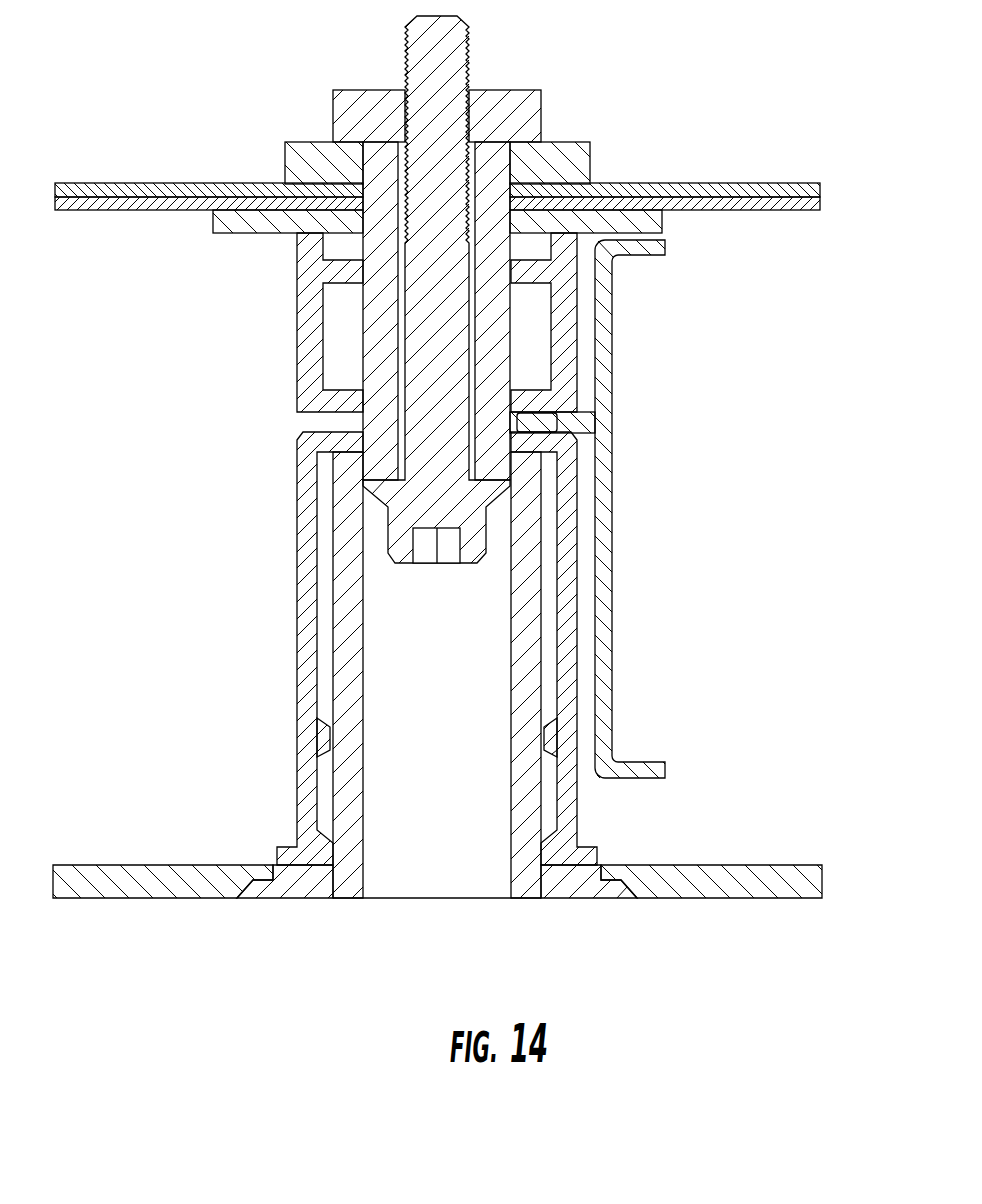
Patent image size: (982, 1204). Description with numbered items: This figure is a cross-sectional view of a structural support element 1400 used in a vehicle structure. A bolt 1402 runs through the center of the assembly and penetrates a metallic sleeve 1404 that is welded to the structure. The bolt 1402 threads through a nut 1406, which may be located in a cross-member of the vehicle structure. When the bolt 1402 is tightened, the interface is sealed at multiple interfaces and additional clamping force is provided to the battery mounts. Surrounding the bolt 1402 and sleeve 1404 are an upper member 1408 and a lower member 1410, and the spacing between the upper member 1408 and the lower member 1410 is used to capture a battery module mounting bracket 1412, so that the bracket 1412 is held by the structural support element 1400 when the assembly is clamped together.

The structural support element 1400 is at (741, 590).
The bolt 1402 is at (424, 396).
The metallic sleeve 1404 is at (322, 578).
The nut 1406 is at (542, 110).
The upper member 1408 is at (295, 273).
The lower member 1410 is at (295, 713).
The battery module mounting bracket 1412 is at (607, 365).